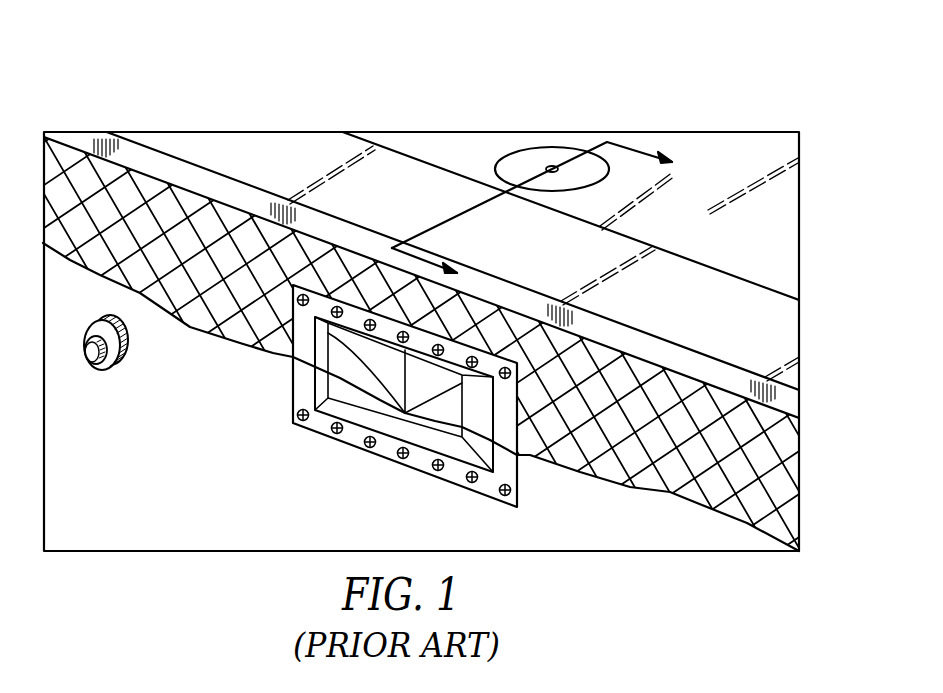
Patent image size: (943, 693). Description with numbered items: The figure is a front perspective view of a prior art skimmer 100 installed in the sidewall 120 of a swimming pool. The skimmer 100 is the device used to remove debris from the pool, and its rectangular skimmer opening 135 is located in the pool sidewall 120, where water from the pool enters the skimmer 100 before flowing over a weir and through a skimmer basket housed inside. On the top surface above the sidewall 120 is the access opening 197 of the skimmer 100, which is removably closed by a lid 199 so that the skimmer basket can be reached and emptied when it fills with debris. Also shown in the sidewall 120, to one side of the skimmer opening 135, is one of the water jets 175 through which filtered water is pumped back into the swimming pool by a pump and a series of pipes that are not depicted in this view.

The skimmer 100 is at (160, 492).
The sidewall 120 is at (778, 485).
The skimmer opening 135 is at (403, 428).
The water jets 175 is at (93, 363).
The access opening 197 is at (540, 158).
The lid 199 is at (563, 152).